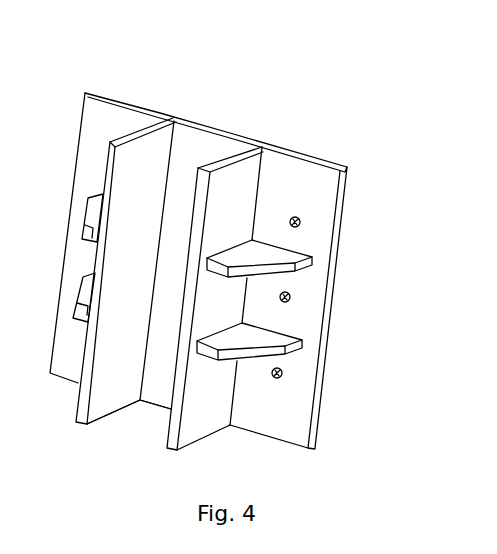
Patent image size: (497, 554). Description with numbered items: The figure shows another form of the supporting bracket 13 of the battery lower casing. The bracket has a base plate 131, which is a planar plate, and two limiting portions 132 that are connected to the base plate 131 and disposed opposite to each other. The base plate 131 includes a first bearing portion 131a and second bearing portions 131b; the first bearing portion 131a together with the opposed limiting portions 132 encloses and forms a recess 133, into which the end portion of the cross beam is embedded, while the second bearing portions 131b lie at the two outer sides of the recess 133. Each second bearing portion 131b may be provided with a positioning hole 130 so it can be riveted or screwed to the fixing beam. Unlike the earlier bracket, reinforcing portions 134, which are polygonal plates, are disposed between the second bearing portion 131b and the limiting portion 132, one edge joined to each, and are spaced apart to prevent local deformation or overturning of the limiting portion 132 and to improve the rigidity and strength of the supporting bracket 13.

The supporting bracket 13 is at (240, 38).
The positioning hole 130 is at (282, 378).
The base plate 131 is at (371, 204).
The first bearing portion 131a is at (235, 136).
The second bearing portion 131b is at (133, 108).
The limiting portion 132 is at (110, 172).
The recess 133 is at (148, 412).
The reinforcing portion 134 is at (297, 272).